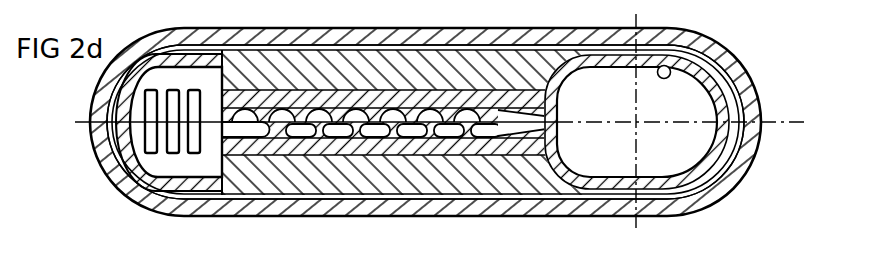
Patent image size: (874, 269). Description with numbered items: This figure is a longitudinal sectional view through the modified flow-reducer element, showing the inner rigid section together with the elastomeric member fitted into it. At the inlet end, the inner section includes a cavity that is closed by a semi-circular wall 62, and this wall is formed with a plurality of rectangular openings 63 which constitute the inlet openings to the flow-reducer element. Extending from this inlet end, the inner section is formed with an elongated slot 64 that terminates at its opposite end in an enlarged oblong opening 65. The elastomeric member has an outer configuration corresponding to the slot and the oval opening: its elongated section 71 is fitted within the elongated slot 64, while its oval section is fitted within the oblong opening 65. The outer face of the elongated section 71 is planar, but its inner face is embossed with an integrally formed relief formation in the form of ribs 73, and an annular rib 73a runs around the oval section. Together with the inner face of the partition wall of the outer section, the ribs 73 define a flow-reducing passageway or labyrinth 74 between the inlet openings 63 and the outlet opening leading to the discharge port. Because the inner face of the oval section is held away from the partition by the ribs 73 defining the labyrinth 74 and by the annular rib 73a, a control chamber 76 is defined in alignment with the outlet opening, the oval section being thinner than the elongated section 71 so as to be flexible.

The semi-circular wall 62 is at (183, 184).
The rectangular openings 63 is at (120, 185).
The elongated slot 64 is at (456, 146).
The enlarged oblong opening 65 is at (657, 78).
The elongated section 71 is at (277, 145).
The ribs 73 is at (352, 126).
The annular rib 73a is at (721, 57).
The flow-reducing passageway or labyrinth 74 is at (381, 142).
The control chamber 76 is at (602, 165).